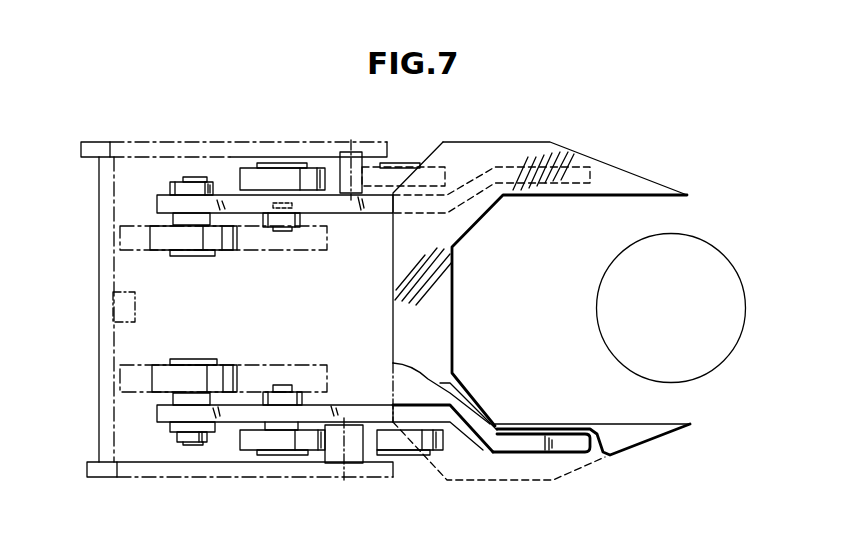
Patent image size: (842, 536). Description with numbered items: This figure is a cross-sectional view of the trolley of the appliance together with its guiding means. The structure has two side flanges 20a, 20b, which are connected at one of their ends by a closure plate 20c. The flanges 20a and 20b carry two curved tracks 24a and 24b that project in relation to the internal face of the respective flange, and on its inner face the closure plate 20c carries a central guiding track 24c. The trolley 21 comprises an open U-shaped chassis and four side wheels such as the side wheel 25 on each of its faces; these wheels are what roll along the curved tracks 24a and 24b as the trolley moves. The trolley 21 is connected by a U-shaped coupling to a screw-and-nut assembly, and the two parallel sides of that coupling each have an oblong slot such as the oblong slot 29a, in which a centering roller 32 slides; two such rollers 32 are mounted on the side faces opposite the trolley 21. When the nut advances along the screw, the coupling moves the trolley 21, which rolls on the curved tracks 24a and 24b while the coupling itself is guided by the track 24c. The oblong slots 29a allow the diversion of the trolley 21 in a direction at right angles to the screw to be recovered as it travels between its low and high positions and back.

The side flange 20a is at (148, 148).
The side flange 20b is at (195, 472).
The closure plate 20c is at (100, 191).
The trolley 21 is at (508, 141).
The curved track 24a is at (348, 173).
The curved track 24b is at (345, 455).
The central guiding track 24c is at (135, 315).
The side wheel 25 is at (310, 172).
The oblong slot 29a is at (311, 380).
The centering roller 32 is at (217, 372).